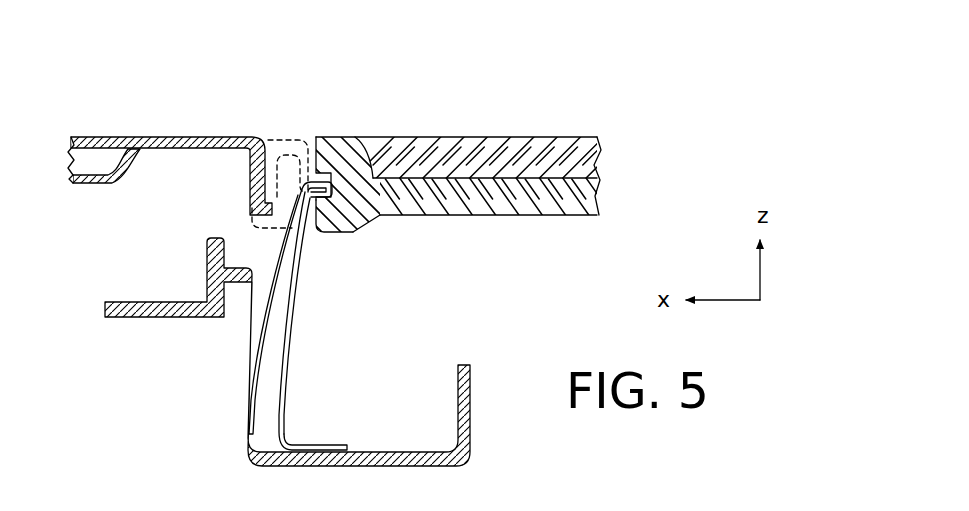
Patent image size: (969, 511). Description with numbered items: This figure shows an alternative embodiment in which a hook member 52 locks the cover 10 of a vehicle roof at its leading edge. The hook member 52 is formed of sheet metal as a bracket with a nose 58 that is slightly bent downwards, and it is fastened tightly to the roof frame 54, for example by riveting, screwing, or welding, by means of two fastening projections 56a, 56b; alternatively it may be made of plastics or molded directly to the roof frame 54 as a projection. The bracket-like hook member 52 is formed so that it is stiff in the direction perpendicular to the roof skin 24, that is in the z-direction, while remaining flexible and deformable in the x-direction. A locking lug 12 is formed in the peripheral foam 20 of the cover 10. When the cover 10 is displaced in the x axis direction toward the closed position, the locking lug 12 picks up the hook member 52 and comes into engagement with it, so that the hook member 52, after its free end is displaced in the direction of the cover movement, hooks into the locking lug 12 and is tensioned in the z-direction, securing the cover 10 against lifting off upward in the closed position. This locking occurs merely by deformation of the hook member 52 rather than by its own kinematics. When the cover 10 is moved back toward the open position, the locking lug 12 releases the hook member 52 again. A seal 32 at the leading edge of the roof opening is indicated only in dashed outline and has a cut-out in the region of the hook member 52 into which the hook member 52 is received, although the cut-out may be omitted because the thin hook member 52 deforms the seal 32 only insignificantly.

The cover 10 is at (484, 119).
The locking lug 12 is at (323, 222).
The peripheral foam 20 is at (388, 198).
The roof skin 24 is at (162, 137).
The seal 32 is at (287, 132).
The hook member 52 is at (300, 308).
The roof frame 54 is at (243, 378).
The fastening projection 56a is at (270, 268).
The fastening projection 56b is at (290, 358).
The nose 58 is at (320, 180).